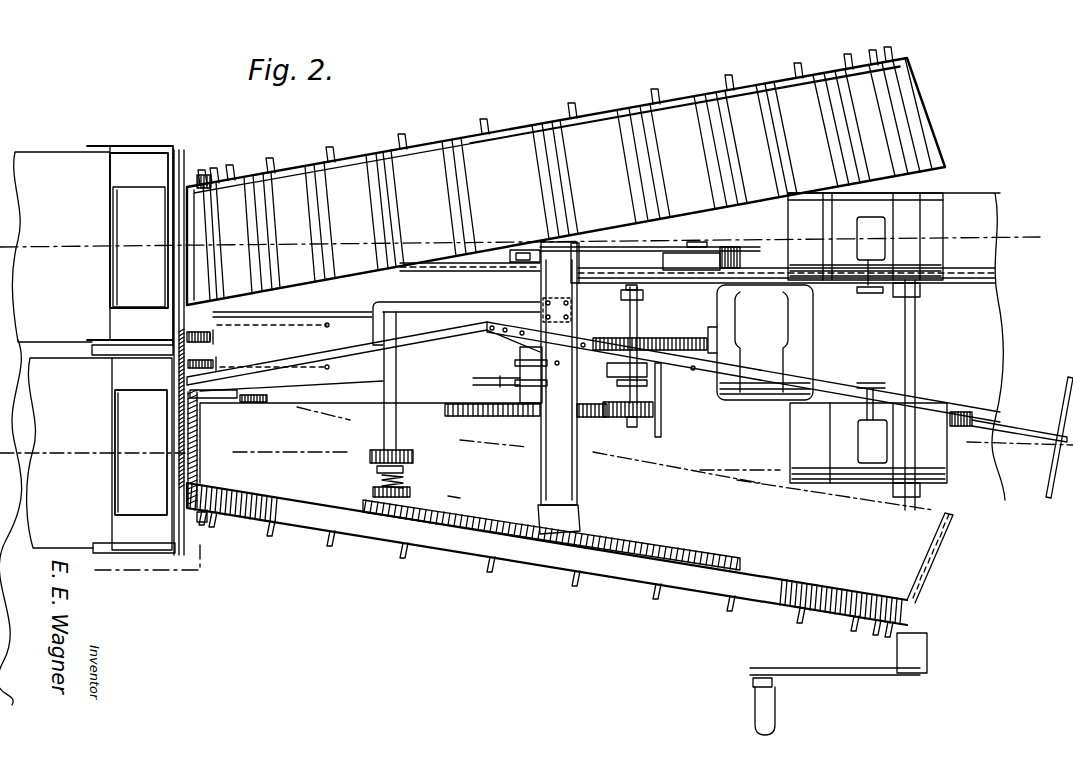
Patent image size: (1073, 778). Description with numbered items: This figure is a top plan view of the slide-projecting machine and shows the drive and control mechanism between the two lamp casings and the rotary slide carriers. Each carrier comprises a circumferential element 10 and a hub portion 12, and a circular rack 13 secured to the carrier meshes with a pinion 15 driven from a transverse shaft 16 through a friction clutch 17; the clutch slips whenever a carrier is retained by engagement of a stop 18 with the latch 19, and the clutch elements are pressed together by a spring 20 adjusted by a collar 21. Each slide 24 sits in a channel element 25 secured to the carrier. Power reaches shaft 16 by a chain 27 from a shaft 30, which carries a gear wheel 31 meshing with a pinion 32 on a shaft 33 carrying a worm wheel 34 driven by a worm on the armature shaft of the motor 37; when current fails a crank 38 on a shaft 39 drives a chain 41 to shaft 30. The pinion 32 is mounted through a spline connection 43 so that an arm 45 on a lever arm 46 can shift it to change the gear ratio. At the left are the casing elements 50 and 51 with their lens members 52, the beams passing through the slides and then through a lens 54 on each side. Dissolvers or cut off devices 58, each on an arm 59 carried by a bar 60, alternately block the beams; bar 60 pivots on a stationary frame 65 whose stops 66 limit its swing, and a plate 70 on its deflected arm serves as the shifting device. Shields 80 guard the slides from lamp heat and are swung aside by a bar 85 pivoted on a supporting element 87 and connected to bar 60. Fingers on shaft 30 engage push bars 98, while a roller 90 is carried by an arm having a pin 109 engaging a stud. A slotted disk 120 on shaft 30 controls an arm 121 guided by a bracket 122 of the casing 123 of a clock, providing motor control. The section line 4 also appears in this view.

The section line 4 is at (140, 564).
The circumferential element 10 is at (400, 535).
The hub portion 12 is at (580, 513).
The circular rack 13 is at (711, 556).
The pinion 15 is at (418, 508).
The transverse shaft 16 is at (384, 427).
The friction clutch 17 is at (456, 494).
The stop 18 is at (333, 142).
The latch 19 is at (203, 174).
The spring 20 is at (381, 481).
The collar 21 is at (405, 470).
The slide 24 is at (428, 135).
The channel element 25 is at (466, 185).
The chain 27 is at (441, 271).
The shaft 30 is at (552, 368).
The gear wheel 31 is at (497, 417).
The pinion 32 is at (615, 418).
The shaft 33 is at (639, 316).
The worm wheel 34 is at (695, 338).
The motor 37 is at (760, 342).
The crank 38 is at (832, 676).
The shaft 39 is at (918, 358).
The chain 41 is at (623, 282).
The spline connection 43 is at (617, 385).
The arm 45 is at (650, 400).
The lever arm 46 is at (662, 419).
The casing element 50 is at (61, 244).
The casing element 51 is at (69, 453).
The lens member 52 is at (141, 452).
The lens 54 is at (858, 292).
The dissolver or cut off device 58 is at (1062, 383).
The arm 59 is at (1030, 428).
The bar 60 is at (838, 386).
The stationary frame 65 is at (548, 484).
The stop 66 is at (568, 333).
The plate 70 is at (520, 347).
The shield 80 is at (178, 285).
The bar 85 is at (290, 362).
The supporting element 87 is at (372, 331).
The roller 90 is at (247, 404).
The push bar 98 is at (338, 311).
The pin 109 is at (213, 337).
The slotted disk 120 is at (512, 250).
The arm 121 is at (615, 247).
The bracket 122 is at (742, 253).
The casing 123 is at (719, 249).